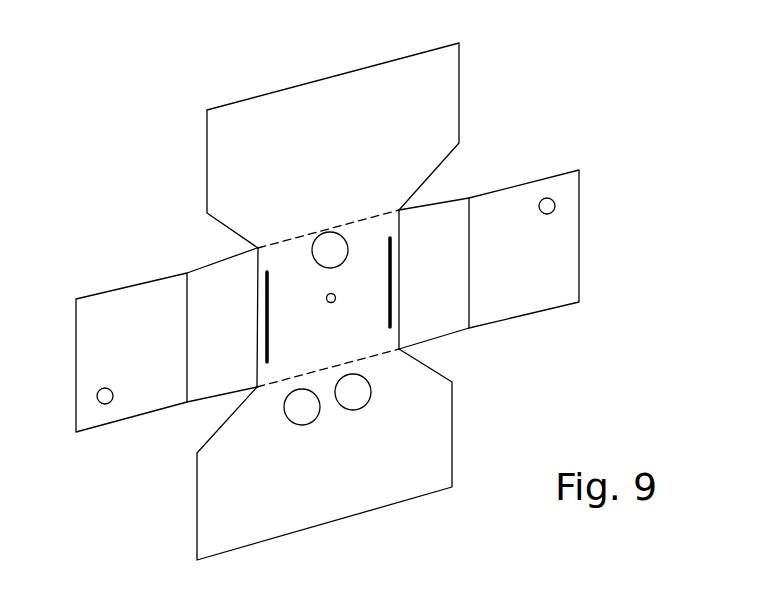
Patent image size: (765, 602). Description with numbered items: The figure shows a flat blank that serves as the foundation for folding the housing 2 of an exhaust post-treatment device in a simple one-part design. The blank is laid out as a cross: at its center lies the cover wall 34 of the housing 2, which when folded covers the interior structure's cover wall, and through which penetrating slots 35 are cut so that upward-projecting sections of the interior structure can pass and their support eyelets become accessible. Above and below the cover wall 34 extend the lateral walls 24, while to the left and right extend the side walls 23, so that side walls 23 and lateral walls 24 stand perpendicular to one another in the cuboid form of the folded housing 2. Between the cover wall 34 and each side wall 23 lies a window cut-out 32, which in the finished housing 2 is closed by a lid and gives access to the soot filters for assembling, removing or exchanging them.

The housing 2 is at (493, 142).
The side walls 23 is at (124, 359).
The lateral walls 24 is at (322, 149).
The window cut-outs 32 is at (212, 339).
The cover wall 34 is at (347, 341).
The penetrating slots 35 is at (268, 307).